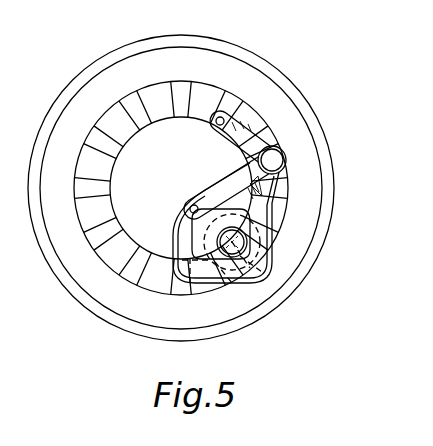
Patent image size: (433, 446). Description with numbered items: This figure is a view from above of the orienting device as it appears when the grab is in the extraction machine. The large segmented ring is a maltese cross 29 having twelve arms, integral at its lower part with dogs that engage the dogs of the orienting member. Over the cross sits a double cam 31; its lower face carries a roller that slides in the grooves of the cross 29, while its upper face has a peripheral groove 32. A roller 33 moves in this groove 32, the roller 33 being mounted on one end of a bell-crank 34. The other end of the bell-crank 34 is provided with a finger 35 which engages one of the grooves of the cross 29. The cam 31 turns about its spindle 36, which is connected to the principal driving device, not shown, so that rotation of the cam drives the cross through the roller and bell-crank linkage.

The maltese cross 29 is at (213, 97).
The double cam 31 is at (283, 211).
The peripheral groove 32 is at (272, 266).
The roller 33 is at (187, 199).
The bell-crank 34 is at (266, 147).
The finger 35 is at (215, 127).
The spindle 36 is at (233, 256).